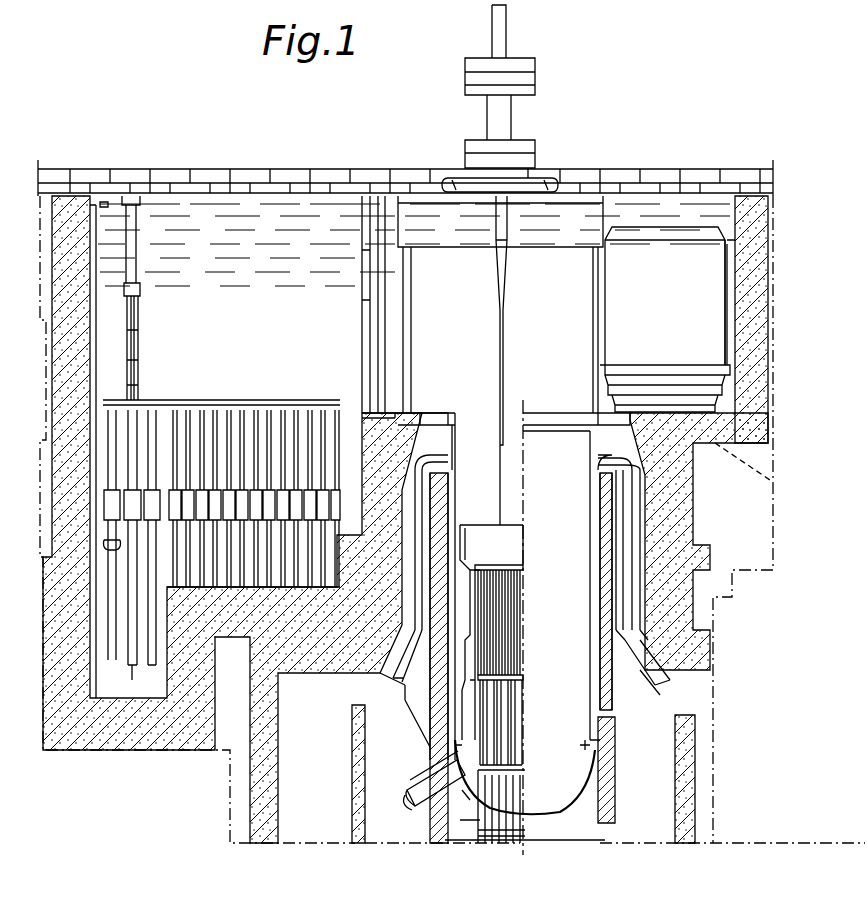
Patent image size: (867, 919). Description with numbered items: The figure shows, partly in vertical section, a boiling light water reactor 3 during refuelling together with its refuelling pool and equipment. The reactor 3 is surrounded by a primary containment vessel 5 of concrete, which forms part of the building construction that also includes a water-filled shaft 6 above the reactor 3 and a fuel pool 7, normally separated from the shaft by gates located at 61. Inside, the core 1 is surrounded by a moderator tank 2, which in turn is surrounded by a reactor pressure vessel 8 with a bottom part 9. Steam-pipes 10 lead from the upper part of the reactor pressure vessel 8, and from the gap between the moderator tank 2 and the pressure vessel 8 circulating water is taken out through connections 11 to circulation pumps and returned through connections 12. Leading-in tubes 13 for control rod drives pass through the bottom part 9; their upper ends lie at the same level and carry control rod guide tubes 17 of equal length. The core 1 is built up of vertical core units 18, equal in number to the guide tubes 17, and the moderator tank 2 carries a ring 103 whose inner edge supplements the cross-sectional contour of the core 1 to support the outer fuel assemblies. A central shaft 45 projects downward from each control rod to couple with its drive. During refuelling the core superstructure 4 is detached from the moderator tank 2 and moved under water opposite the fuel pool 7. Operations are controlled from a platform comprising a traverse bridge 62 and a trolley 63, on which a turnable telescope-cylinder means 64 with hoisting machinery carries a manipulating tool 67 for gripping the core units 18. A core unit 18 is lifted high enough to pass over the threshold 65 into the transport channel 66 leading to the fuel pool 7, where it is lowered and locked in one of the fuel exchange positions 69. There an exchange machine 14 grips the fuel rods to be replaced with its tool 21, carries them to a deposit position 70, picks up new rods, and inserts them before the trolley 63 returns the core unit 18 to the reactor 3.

The core 1 is at (503, 648).
The moderator tank 2 is at (473, 620).
The reactor 3 is at (552, 697).
The core superstructure 4 is at (667, 319).
The primary containment vessel 5 is at (272, 780).
The shaft 6 is at (500, 304).
The fuel pool 7 is at (256, 318).
The reactor pressure vessel 8 is at (527, 649).
The bottom part 9 is at (525, 790).
The steam-pipes 10 is at (628, 492).
The connections 11 is at (652, 690).
The connections 12 is at (425, 790).
The leading-in tubes 13 is at (515, 797).
The exchange machine 14 is at (140, 333).
The control rod guide tubes 17 is at (518, 730).
The core units 18 is at (518, 665).
The tool 21 is at (140, 298).
The central shaft 45 is at (134, 553).
The gates location 61 is at (383, 298).
The traverse bridge 62 is at (650, 192).
The trolley 63 is at (538, 182).
The telescope-cylinder means 64 is at (507, 294).
The threshold 65 is at (390, 408).
The transport channel 66 is at (388, 333).
The manipulating tool 67 is at (505, 566).
The fuel exchange positions 69 is at (160, 420).
The deposit position 70 is at (248, 412).
The ring 103 is at (475, 560).